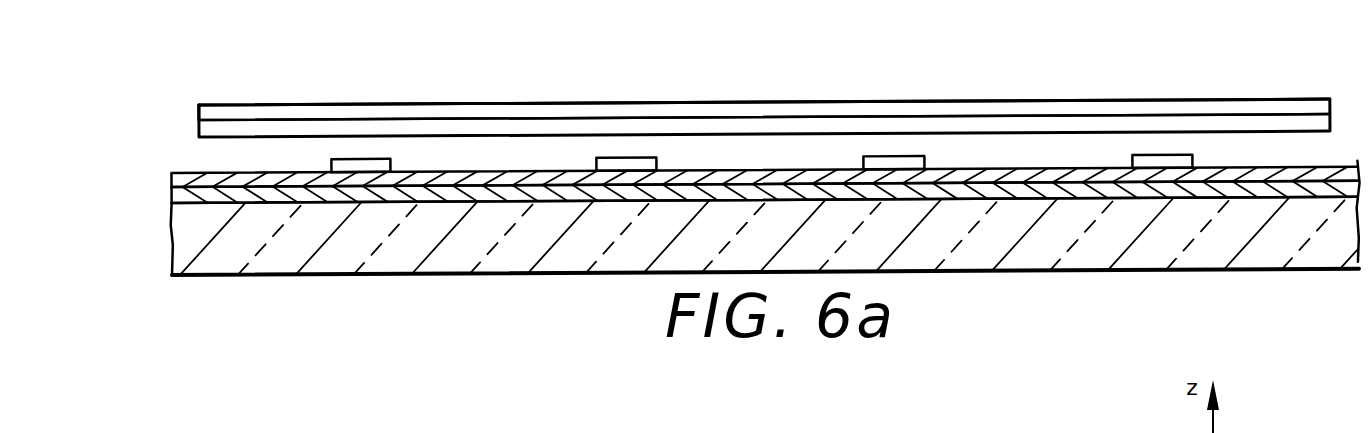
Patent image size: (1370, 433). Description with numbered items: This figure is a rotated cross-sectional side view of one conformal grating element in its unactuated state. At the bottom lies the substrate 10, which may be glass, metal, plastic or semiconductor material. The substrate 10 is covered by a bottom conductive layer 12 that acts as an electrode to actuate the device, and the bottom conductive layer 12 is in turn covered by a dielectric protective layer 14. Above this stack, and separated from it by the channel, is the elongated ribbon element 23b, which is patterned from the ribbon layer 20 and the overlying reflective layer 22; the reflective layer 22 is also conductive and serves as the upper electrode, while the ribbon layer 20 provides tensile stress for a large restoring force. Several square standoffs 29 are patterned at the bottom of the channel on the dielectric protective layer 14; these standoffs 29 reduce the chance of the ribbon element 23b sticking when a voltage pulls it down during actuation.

The substrate 10 is at (172, 252).
The bottom conductive layer 12 is at (172, 193).
The dielectric protective layer 14 is at (172, 180).
The ribbon layer 20 is at (199, 128).
The reflective layer 22 is at (243, 108).
The elongated ribbon element 23b is at (458, 103).
The standoffs 29 is at (353, 168).